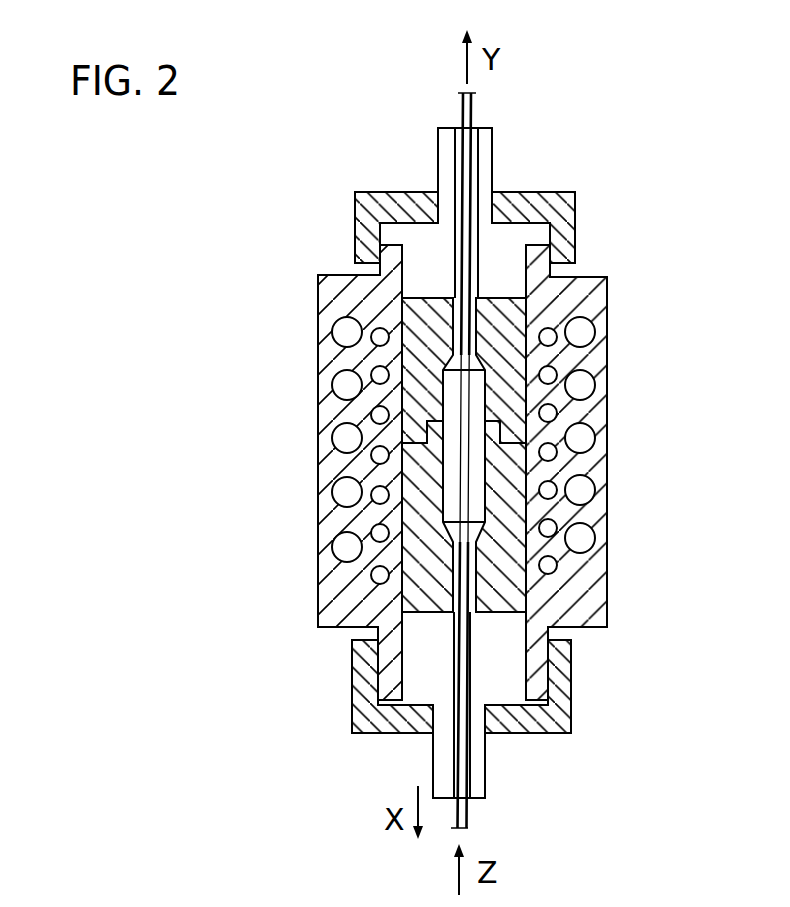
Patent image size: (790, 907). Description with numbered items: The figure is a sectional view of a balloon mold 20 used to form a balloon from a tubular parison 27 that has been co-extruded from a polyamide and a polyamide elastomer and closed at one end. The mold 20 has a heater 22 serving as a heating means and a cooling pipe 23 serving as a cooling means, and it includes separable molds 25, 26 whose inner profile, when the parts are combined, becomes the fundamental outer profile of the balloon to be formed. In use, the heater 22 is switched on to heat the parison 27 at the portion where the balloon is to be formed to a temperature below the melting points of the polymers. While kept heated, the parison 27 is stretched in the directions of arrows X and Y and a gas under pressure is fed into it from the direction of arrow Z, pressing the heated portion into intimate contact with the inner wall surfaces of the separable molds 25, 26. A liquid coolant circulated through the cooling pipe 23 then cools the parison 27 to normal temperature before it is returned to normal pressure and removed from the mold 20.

The mold 20 is at (283, 647).
The heater 22 is at (549, 411).
The cooling pipe 23 is at (588, 489).
The separable mold 25 is at (518, 317).
The separable mold 26 is at (510, 600).
The tubular parison 27 is at (472, 104).